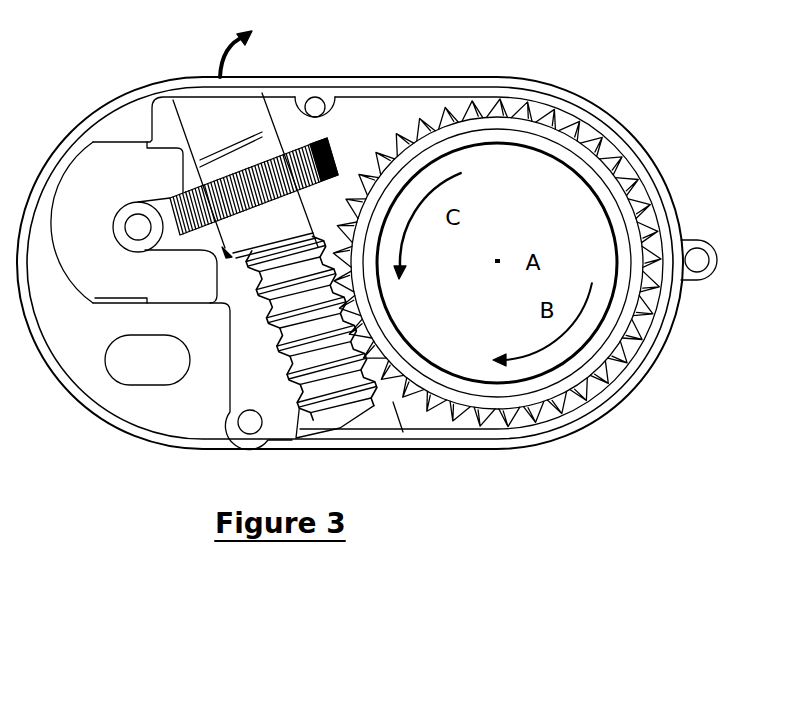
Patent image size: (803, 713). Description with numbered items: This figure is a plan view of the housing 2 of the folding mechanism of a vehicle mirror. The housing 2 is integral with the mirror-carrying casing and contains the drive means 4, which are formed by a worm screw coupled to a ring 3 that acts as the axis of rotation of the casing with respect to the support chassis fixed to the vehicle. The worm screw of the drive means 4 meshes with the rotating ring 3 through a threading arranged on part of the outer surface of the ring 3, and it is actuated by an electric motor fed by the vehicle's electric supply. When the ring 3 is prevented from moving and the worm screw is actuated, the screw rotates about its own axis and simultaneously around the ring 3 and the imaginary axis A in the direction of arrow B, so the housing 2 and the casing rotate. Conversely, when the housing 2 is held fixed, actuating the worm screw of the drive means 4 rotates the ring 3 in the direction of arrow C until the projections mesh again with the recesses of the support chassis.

The housing 2 is at (387, 75).
The ring 3 is at (580, 128).
The drive means 4 is at (320, 400).